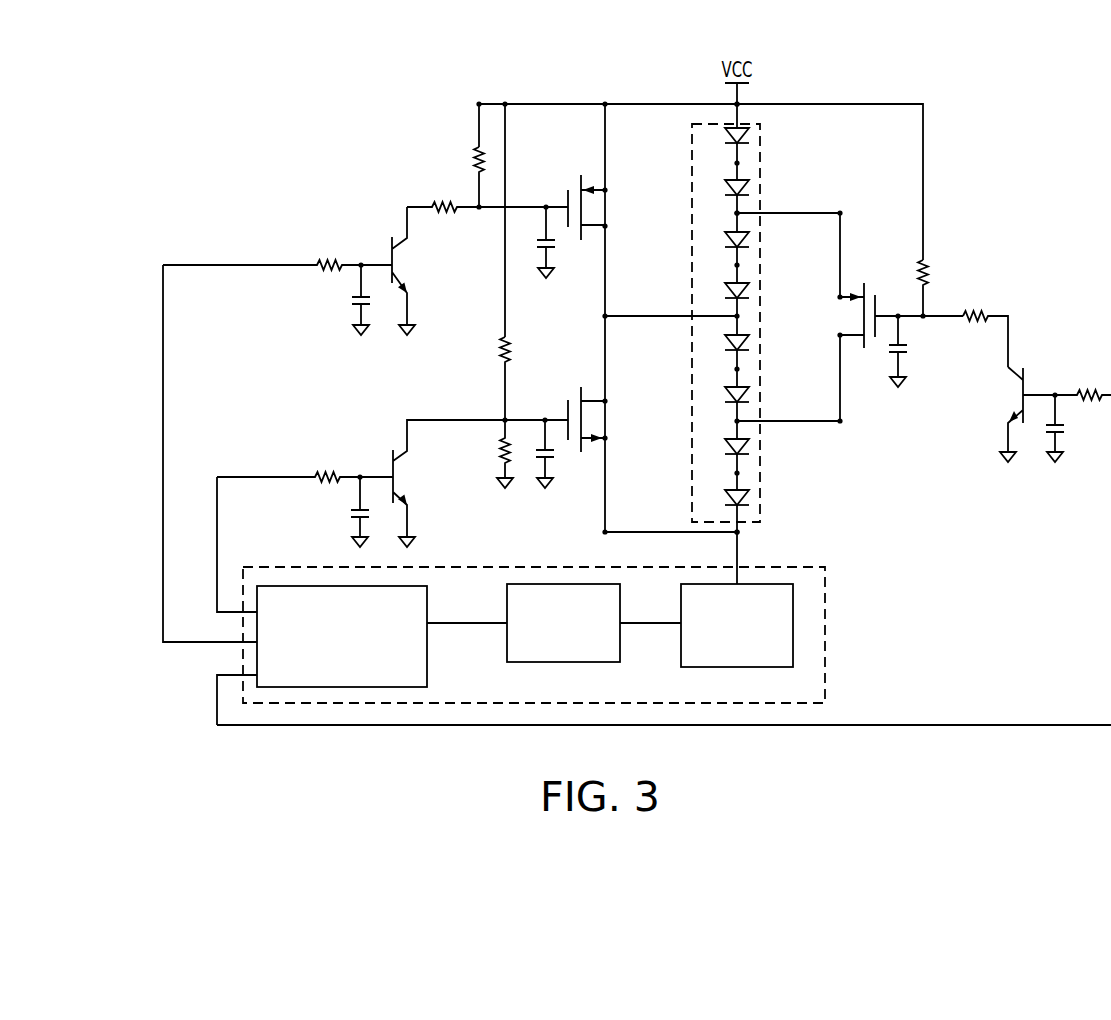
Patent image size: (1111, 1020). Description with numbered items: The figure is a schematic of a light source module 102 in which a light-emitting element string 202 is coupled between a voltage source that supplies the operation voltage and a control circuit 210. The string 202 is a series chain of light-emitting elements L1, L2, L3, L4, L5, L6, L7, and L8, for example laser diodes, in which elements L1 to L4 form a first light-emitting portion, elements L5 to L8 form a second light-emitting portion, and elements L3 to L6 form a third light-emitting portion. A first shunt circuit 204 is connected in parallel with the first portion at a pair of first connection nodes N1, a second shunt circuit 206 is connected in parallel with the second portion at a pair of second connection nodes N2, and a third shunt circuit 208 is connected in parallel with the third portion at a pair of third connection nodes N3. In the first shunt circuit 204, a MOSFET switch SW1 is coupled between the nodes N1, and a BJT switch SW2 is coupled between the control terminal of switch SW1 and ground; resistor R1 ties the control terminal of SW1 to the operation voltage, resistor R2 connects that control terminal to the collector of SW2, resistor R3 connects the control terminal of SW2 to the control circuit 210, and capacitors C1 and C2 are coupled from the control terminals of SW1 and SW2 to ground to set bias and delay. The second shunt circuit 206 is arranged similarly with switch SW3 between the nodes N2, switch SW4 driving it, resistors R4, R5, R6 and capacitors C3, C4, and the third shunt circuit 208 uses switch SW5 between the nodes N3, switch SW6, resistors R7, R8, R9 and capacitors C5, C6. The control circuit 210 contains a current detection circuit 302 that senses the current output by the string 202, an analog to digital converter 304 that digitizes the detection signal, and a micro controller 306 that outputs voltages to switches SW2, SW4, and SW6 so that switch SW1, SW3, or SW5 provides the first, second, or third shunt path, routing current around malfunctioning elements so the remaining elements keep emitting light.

The light source module 102 is at (1065, 795).
The light-emitting element string 202 is at (690, 187).
The first shunt circuit 204 is at (358, 203).
The second shunt circuit 206 is at (367, 423).
The third shunt circuit 208 is at (1010, 254).
The control circuit 210 is at (825, 610).
The current detection circuit 302 is at (738, 667).
The analog to digital converter 304 is at (568, 662).
The micro controller 306 is at (340, 687).
The first connection nodes N1 is at (737, 316).
The second connection nodes N2 is at (737, 316).
The third connection nodes N3 is at (737, 421).
The light-emitting element L1 is at (723, 138).
The light-emitting element L2 is at (723, 190).
The light-emitting element L3 is at (723, 242).
The light-emitting element L4 is at (723, 293).
The light-emitting element L5 is at (723, 345).
The light-emitting element L6 is at (723, 397).
The light-emitting element L7 is at (723, 449).
The light-emitting element L8 is at (723, 500).
The switch SW1 is at (604, 207).
The switch SW2 is at (420, 271).
The switch SW3 is at (599, 419).
The switch SW4 is at (480, 483).
The switch SW5 is at (881, 315).
The switch SW6 is at (995, 414).
The resistor R1 is at (464, 175).
The resistor R2 is at (487, 193).
The resistor R3 is at (277, 250).
The resistor R4 is at (522, 378).
The resistor R5 is at (490, 454).
The resistor R6 is at (305, 493).
The resistor R7 is at (939, 288).
The resistor R8 is at (985, 326).
The resistor R9 is at (1067, 380).
The capacitor C1 is at (558, 242).
The capacitor C2 is at (374, 300).
The capacitor C3 is at (560, 454).
The capacitor C4 is at (371, 512).
The capacitor C5 is at (911, 351).
The capacitor C6 is at (1070, 428).